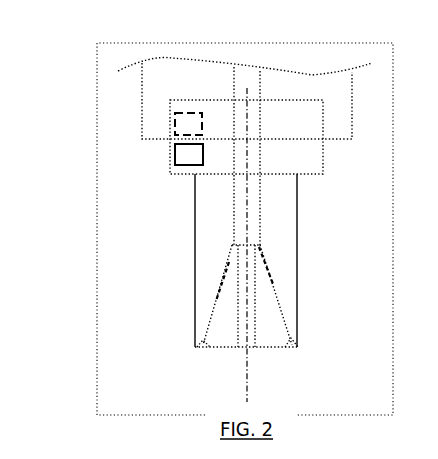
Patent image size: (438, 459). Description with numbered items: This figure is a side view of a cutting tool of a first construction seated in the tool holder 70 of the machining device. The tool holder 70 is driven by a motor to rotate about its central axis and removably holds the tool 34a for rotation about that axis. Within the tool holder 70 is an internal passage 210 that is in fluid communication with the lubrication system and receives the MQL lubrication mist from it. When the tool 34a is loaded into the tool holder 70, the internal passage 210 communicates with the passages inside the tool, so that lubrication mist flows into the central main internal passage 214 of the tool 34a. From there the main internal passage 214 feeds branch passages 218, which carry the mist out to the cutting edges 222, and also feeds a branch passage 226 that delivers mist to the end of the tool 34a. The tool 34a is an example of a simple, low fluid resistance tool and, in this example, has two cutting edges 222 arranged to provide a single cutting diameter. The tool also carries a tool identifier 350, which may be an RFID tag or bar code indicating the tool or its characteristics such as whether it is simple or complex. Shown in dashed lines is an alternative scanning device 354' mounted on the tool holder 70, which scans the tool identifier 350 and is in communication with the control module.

The tool holder 70 is at (154, 85).
The internal passage 210 is at (259, 85).
The scanning device 354' is at (126, 135).
The tool identifier 350 is at (180, 158).
The main internal passage 214 is at (260, 198).
The tool 34a is at (195, 217).
The branch passages 218 is at (228, 265).
The cutting edges 222 is at (195, 347).
The branch passage 226 is at (238, 337).